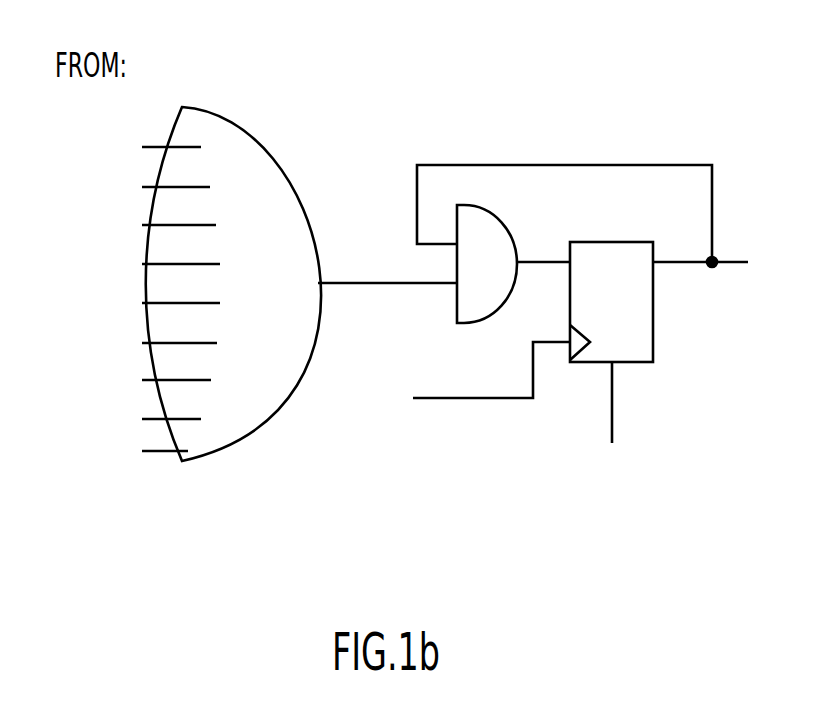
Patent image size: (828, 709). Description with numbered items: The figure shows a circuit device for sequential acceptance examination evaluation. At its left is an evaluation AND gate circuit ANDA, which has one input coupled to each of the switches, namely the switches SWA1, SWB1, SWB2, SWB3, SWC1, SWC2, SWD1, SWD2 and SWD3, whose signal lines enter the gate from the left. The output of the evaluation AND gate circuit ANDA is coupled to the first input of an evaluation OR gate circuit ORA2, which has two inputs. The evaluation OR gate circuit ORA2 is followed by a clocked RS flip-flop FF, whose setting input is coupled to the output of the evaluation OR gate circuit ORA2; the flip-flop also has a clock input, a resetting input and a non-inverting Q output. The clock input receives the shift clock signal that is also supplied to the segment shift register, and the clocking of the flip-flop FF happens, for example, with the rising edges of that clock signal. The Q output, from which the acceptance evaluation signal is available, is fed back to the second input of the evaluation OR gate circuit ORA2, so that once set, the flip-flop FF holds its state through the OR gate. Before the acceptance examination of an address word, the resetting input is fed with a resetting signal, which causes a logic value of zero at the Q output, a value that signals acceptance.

The evaluation AND gate circuit ANDA is at (233, 284).
The evaluation OR gate circuit ORA2 is at (515, 245).
The clocked RS flip-flop FF is at (580, 342).
The switch SWA1 is at (127, 140).
The switch SWB1 is at (131, 185).
The switch SWB2 is at (134, 223).
The switch SWB3 is at (136, 263).
The switch SWC1 is at (136, 308).
The switch SWC2 is at (135, 346).
The switch SWD1 is at (132, 383).
The switch SWD2 is at (127, 421).
The switch SWD3 is at (120, 458).